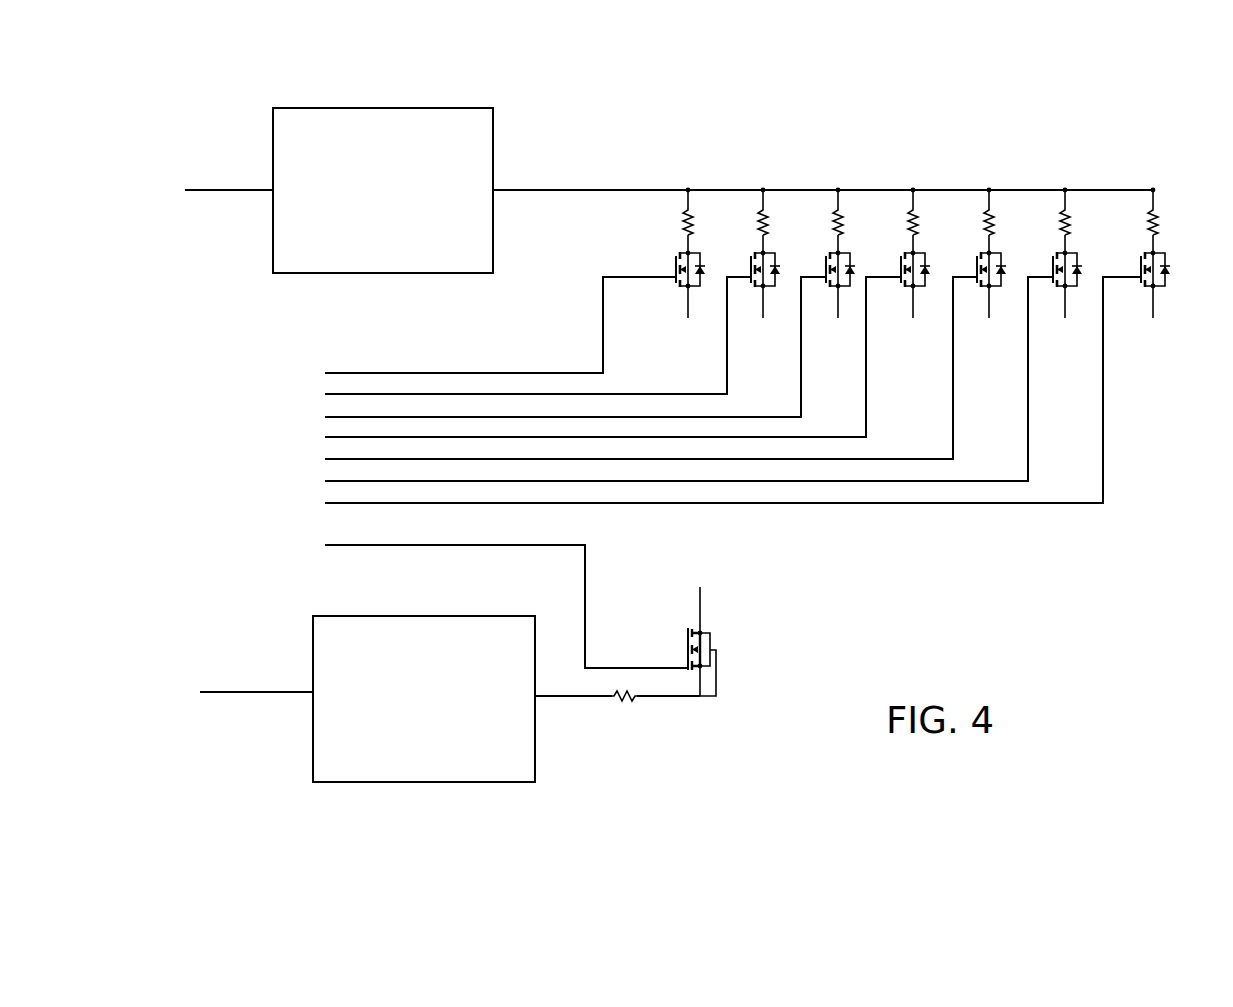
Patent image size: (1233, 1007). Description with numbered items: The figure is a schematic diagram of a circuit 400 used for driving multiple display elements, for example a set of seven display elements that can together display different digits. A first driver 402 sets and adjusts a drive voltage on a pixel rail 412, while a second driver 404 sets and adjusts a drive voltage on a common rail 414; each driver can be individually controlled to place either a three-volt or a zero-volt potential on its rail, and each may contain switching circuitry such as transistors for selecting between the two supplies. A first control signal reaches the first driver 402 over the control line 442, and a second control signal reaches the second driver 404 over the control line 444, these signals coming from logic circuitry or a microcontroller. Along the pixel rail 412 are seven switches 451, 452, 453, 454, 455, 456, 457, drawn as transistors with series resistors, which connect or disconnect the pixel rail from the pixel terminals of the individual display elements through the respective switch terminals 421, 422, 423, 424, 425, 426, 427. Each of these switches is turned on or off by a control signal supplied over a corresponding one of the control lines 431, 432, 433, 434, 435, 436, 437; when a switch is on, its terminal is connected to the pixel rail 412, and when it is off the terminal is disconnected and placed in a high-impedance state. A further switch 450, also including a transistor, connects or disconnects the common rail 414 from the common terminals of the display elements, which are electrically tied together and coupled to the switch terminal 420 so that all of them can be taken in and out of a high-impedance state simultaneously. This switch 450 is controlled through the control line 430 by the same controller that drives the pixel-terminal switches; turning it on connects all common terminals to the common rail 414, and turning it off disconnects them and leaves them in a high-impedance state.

The circuit 400 is at (586, 70).
The first driver 402 is at (322, 108).
The second driver 404 is at (330, 616).
The pixel rail 412 is at (622, 190).
The common rail 414 is at (592, 699).
The switch terminal 420 is at (702, 603).
The switch terminal 421 is at (684, 300).
The switch terminal 422 is at (759, 300).
The switch terminal 423 is at (834, 298).
The switch terminal 424 is at (909, 297).
The switch terminal 425 is at (985, 297).
The switch terminal 426 is at (1061, 297).
The switch terminal 427 is at (1149, 297).
The control line 430 is at (332, 545).
The control line 431 is at (330, 371).
The control line 432 is at (330, 392).
The control line 433 is at (330, 415).
The control line 434 is at (330, 435).
The control line 435 is at (330, 457).
The control line 436 is at (330, 479).
The control line 437 is at (330, 501).
The control line 442 is at (230, 190).
The control line 444 is at (270, 690).
The switch 450 is at (717, 650).
The switch 451 is at (675, 258).
The switch 452 is at (750, 258).
The switch 453 is at (825, 258).
The switch 454 is at (900, 258).
The switch 455 is at (976, 258).
The switch 456 is at (1052, 258).
The switch 457 is at (1140, 258).